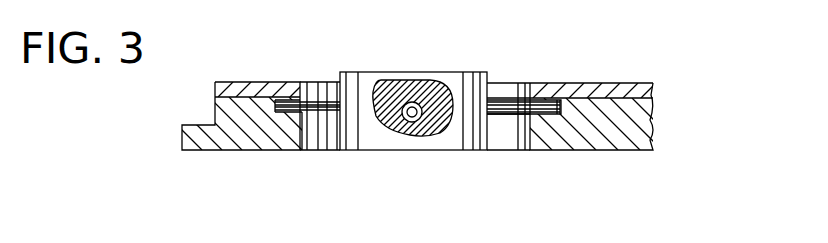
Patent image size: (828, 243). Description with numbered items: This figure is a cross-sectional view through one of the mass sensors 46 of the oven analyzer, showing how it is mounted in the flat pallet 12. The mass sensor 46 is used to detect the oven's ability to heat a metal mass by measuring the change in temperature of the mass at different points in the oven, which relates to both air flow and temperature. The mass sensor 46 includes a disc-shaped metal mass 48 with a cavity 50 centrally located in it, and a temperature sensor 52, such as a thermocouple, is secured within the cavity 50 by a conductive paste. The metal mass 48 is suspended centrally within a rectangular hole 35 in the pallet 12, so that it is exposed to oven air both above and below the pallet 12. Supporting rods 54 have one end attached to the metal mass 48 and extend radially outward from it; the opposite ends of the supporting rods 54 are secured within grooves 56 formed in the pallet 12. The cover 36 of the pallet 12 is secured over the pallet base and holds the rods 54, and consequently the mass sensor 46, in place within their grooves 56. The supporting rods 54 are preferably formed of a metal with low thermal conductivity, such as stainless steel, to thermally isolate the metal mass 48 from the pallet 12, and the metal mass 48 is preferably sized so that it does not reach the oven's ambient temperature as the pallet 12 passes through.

The pallet 12 is at (605, 122).
The rectangular hole 35 is at (523, 140).
The cover 36 is at (628, 88).
The mass sensor 46 is at (404, 111).
The metal mass 48 is at (471, 86).
The cavity 50 is at (418, 104).
The temperature sensor 52 is at (416, 122).
The supporting rod 54 is at (292, 105).
The groove 56 is at (544, 85).